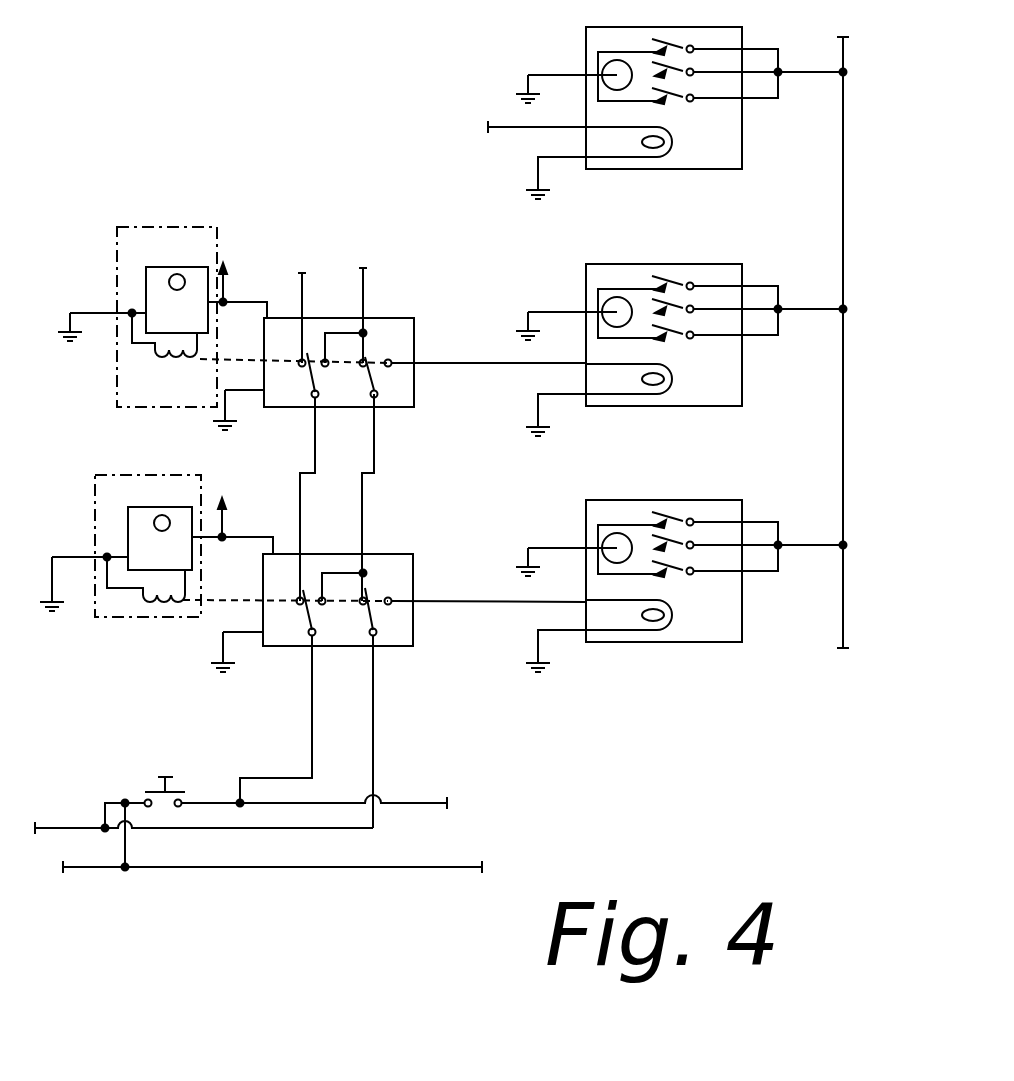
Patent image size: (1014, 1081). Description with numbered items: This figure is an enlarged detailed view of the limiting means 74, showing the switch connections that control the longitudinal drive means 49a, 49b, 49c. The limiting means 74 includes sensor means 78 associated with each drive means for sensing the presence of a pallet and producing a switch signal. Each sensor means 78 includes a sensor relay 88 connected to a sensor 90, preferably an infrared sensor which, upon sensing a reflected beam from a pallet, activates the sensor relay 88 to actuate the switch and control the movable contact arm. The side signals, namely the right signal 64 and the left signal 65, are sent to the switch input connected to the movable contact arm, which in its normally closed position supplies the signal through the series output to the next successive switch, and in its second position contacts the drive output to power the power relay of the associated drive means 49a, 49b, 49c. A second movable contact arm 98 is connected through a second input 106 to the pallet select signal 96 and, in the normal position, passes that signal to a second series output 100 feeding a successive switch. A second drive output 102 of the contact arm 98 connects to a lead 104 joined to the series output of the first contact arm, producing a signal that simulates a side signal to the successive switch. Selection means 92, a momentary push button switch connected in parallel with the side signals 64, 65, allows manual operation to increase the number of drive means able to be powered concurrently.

The longitudinal drive means 49a is at (727, 633).
The longitudinal drive means 49b is at (715, 393).
The longitudinal drive means 49c is at (725, 153).
The right signal 64 is at (400, 872).
The left signal 65 is at (195, 832).
The limiting means 74 is at (347, 240).
The sensor means 78 is at (118, 290).
The sensor relay 88 is at (147, 607).
The sensor 90 is at (137, 515).
The selection means 92 is at (148, 790).
The pallet select signal 96 is at (317, 420).
The second movable contact arm 98 is at (303, 378).
The second series output 100 is at (300, 283).
The second drive output 102 is at (325, 607).
The lead 104 is at (342, 333).
The second input 106 is at (306, 408).